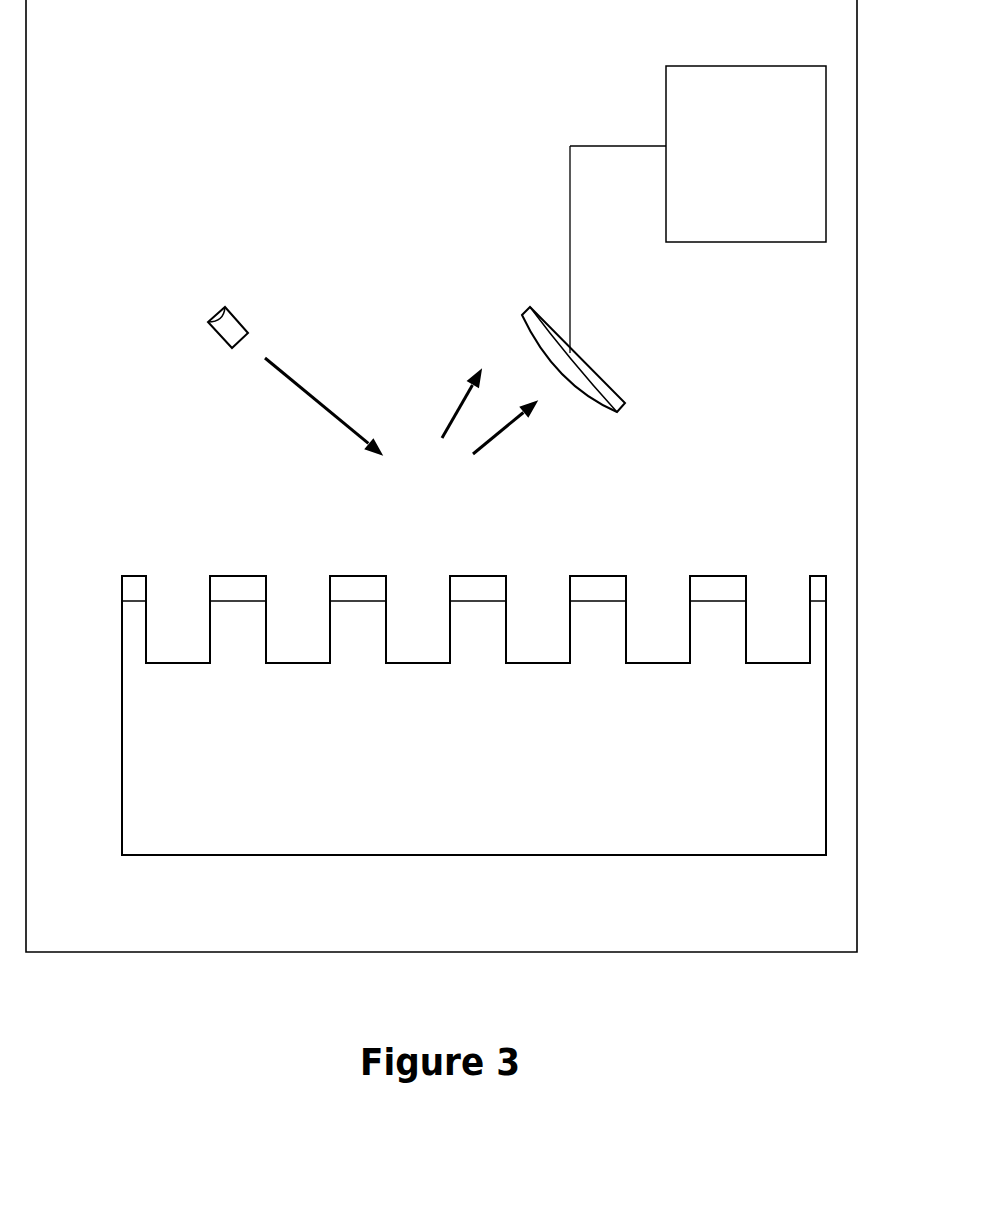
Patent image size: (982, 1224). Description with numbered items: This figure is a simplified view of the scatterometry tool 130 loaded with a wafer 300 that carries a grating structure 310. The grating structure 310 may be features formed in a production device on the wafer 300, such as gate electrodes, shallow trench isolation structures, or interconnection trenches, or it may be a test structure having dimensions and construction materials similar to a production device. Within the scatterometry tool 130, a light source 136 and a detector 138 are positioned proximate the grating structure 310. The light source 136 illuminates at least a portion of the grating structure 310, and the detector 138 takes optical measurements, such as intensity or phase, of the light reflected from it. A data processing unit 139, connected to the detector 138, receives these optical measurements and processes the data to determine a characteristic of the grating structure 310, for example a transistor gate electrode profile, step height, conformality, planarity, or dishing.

The scatterometry tool 130 is at (850, 933).
The light source 136 is at (233, 328).
The detector 138 is at (602, 378).
The data processing unit 139 is at (725, 213).
The wafer 300 is at (143, 702).
The grating structure 310 is at (192, 496).